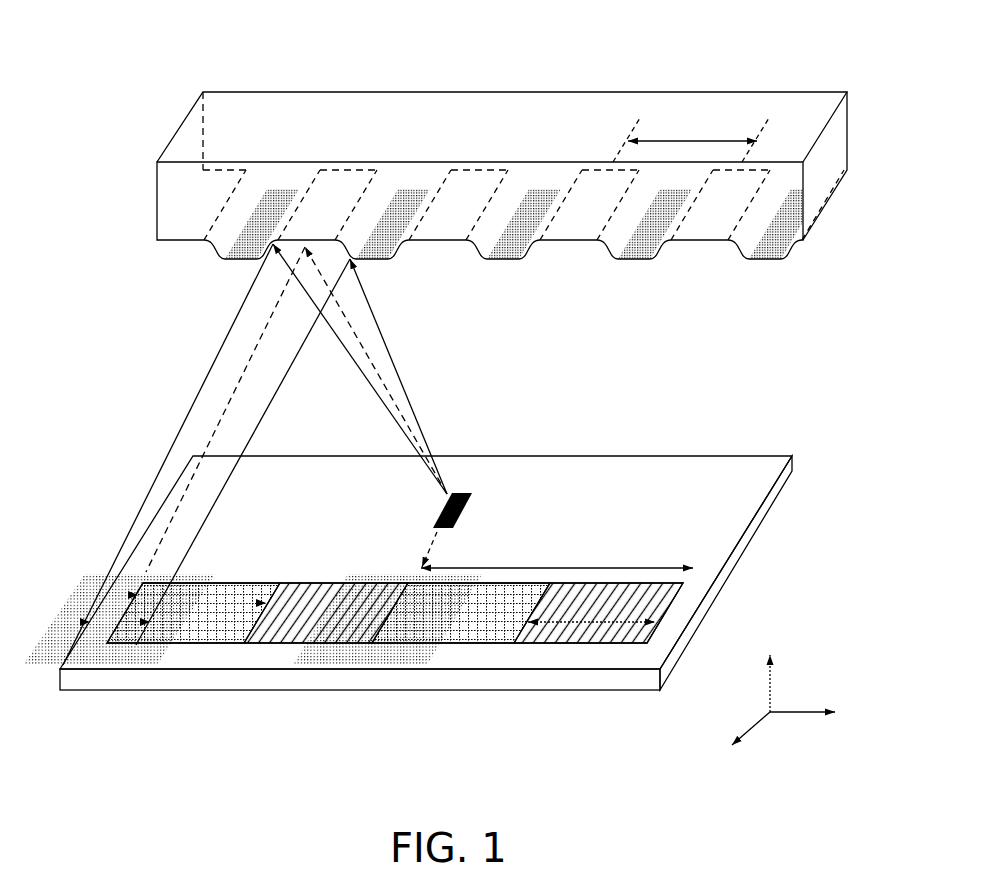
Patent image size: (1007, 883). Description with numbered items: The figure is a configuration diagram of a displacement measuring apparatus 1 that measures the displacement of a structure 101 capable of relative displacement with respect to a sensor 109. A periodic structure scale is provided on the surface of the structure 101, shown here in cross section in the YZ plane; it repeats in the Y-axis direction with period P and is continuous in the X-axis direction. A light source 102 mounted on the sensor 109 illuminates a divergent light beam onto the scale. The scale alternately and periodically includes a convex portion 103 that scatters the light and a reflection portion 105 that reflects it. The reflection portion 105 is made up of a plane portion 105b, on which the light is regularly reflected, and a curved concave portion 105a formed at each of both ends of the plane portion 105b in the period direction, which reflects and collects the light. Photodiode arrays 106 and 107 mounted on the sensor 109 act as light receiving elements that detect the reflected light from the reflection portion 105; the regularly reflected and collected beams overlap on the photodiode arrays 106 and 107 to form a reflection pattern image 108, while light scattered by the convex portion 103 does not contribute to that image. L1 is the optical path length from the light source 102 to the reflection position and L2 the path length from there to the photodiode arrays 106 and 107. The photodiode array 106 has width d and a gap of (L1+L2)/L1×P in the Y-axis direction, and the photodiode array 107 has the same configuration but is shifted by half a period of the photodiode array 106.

The displacement measuring apparatus 1 is at (703, 62).
The structure 101 is at (468, 245).
The light source 102 is at (440, 513).
The convex portion 103 is at (542, 286).
The reflection portion 105 is at (524, 286).
The curved concave portion 105a is at (657, 248).
The plane portion 105b is at (560, 243).
The photodiode array 106 is at (220, 628).
The photodiode array 107 is at (300, 632).
The reflection pattern image 108 is at (395, 615).
The sensor 109 is at (725, 467).